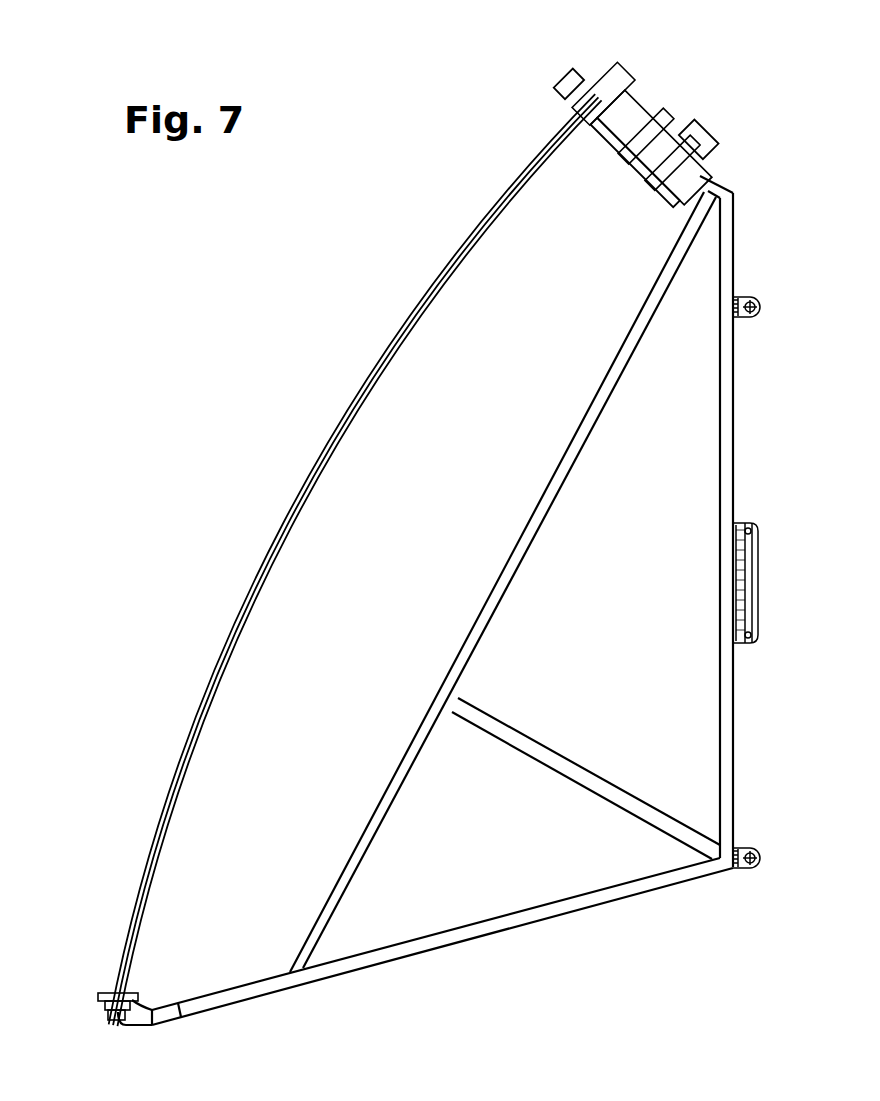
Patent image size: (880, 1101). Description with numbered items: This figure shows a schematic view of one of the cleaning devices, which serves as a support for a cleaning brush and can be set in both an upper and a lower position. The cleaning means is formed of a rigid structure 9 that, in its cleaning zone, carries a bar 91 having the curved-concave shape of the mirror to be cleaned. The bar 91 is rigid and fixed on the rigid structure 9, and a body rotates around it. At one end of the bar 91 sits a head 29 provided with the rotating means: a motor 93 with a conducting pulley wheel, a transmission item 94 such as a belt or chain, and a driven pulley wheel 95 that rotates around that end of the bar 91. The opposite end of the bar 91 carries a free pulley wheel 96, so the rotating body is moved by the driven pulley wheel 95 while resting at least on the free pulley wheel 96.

The rigid structure 9 is at (662, 468).
The head 29 is at (678, 113).
The bar 91 is at (514, 187).
The motor 93 is at (717, 138).
The transmission item 94 is at (649, 117).
The driven pulley wheel 95 is at (568, 69).
The free pulley wheel 96 is at (108, 992).